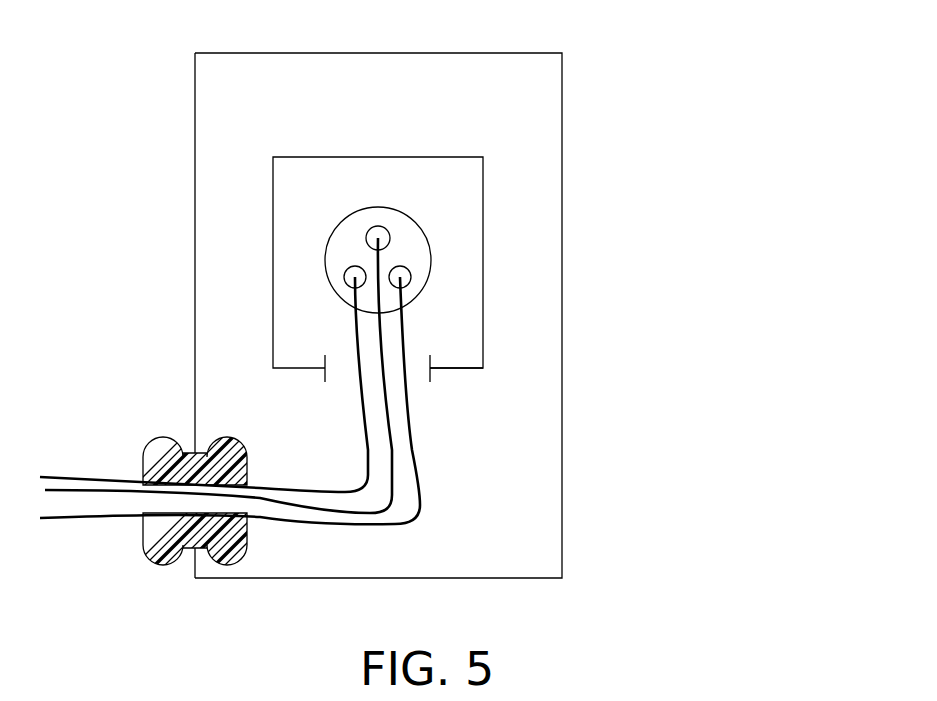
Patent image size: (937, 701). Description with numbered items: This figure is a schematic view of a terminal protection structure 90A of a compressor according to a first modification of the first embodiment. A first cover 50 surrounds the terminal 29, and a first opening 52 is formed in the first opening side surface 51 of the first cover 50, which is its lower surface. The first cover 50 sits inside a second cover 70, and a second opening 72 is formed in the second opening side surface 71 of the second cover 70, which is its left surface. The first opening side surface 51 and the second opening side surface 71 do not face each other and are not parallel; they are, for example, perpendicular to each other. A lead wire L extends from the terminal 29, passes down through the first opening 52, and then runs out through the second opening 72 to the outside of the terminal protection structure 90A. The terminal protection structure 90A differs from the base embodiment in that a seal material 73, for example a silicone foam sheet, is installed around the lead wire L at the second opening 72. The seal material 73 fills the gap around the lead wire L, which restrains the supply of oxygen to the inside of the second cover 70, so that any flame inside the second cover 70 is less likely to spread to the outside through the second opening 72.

The terminal protection structure 90A is at (668, 105).
The second cover 70 is at (562, 318).
The second opening side surface 71 is at (195, 249).
The second opening 72 is at (178, 552).
The seal material 73 is at (155, 458).
The first cover 50 is at (463, 157).
The first opening side surface 51 is at (453, 368).
The first opening 52 is at (430, 372).
The terminal 29 is at (437, 232).
The lead wire L is at (347, 530).